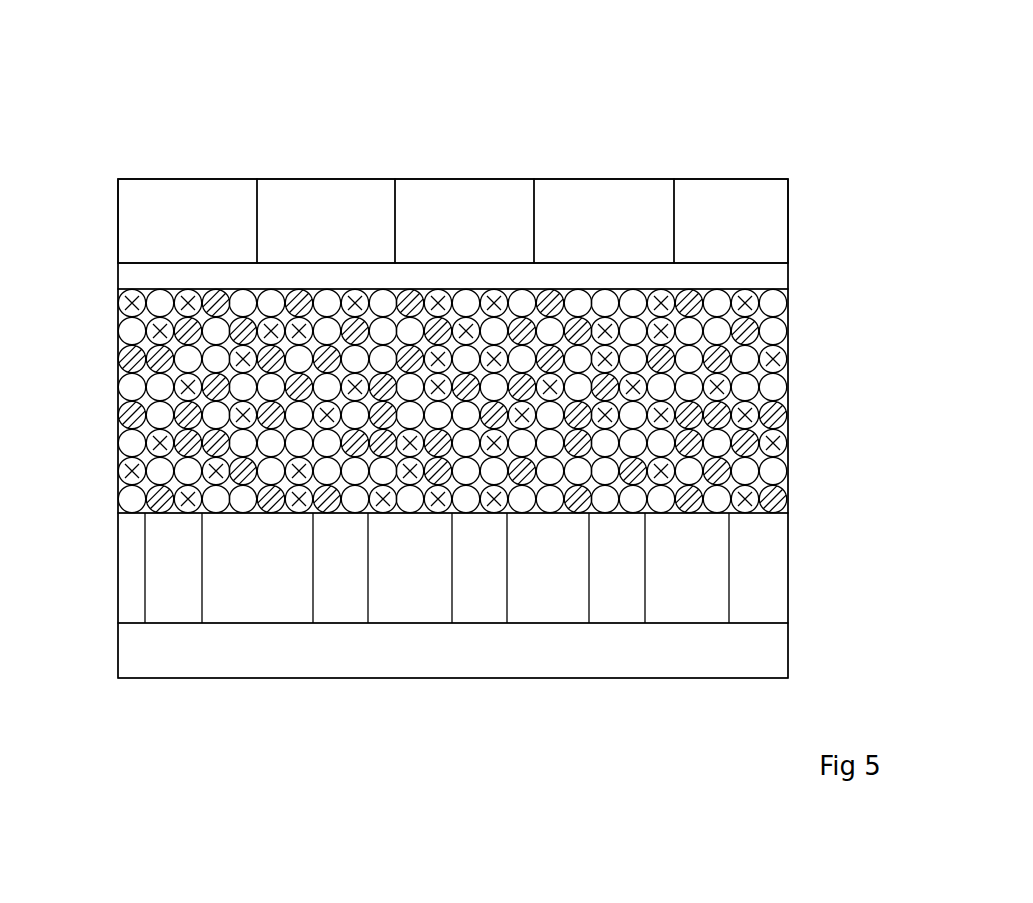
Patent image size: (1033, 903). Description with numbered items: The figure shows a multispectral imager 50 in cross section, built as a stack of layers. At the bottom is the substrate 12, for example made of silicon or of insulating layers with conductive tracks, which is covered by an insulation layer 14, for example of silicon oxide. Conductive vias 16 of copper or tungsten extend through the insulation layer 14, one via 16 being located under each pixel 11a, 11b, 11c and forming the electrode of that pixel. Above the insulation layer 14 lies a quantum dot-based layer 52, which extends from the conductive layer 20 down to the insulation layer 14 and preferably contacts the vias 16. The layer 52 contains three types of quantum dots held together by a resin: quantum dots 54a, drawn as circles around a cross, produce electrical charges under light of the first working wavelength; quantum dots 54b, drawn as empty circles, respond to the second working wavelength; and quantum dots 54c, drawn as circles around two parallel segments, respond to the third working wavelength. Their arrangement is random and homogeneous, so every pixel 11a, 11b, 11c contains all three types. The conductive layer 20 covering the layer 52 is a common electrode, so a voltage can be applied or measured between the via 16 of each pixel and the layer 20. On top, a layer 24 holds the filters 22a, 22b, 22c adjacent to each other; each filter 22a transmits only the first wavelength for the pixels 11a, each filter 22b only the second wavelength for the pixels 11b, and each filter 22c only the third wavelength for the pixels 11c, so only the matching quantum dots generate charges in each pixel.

The multispectral imager 50 is at (847, 89).
The layer 24 is at (449, 193).
The filter 22a is at (454, 191).
The filter 22b is at (154, 191).
The filter 22c is at (306, 191).
The pixel 11a is at (489, 159).
The pixel 11b is at (212, 159).
The pixel 11c is at (766, 159).
The conductive layer 20 is at (755, 277).
The quantum dot-based layer 52 is at (411, 392).
The quantum dots 54a is at (118, 307).
The quantum dots 54b is at (128, 333).
The quantum dots 54c is at (118, 362).
The insulation layer 14 is at (453, 568).
The conductive vias 16 is at (755, 562).
The substrate 12 is at (132, 652).